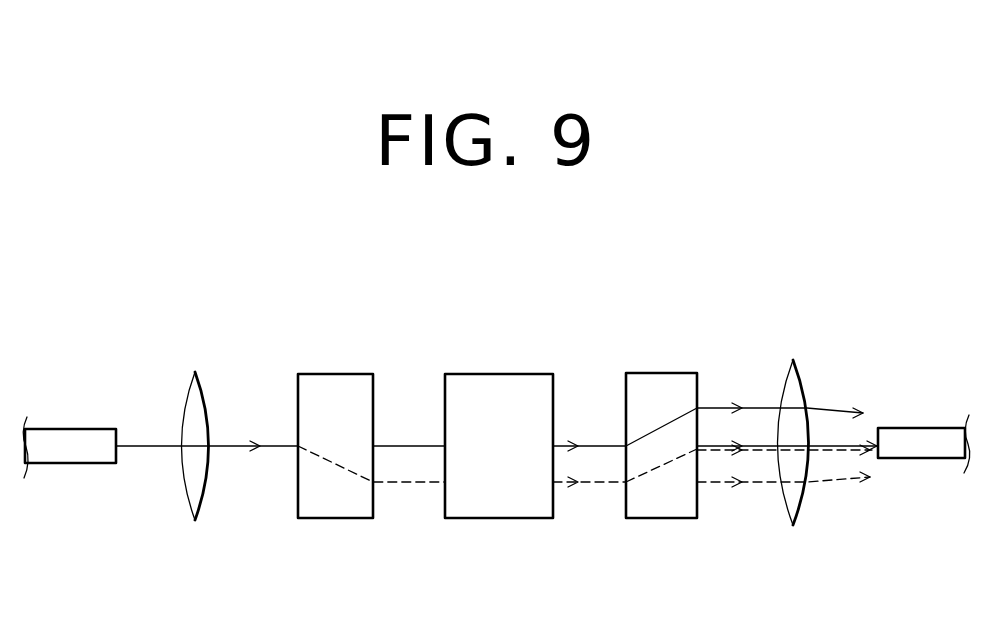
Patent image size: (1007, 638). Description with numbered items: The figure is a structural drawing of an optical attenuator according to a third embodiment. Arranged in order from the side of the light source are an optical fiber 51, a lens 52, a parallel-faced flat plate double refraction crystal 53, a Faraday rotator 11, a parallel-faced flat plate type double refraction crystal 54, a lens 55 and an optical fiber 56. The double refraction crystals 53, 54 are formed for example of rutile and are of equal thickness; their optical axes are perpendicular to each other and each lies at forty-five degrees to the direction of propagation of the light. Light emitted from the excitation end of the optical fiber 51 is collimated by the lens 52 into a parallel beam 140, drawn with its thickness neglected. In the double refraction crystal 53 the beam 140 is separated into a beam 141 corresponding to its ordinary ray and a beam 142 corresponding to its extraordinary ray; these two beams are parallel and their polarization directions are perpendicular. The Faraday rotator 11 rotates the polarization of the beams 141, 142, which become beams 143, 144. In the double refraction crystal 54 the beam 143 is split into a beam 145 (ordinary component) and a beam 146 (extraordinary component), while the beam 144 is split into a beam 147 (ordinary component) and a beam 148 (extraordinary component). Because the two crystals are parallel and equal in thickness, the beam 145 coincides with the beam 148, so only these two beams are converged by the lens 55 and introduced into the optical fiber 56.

The Faraday rotator 11 is at (487, 373).
The optical fiber 51 is at (74, 428).
The lens 52 is at (200, 380).
The parallel-faced flat plate double refraction crystal 53 is at (343, 373).
The parallel-faced flat plate type double refraction crystal 54 is at (655, 371).
The lens 55 is at (795, 377).
The optical fiber 56 is at (922, 428).
The beam 140 is at (235, 443).
The beam 141 is at (402, 443).
The beam 142 is at (402, 482).
The beam 143 is at (592, 443).
The beam 144 is at (593, 482).
The beam 145 is at (717, 443).
The beam 146 is at (757, 408).
The beam 147 is at (708, 482).
The beam 148 is at (750, 450).